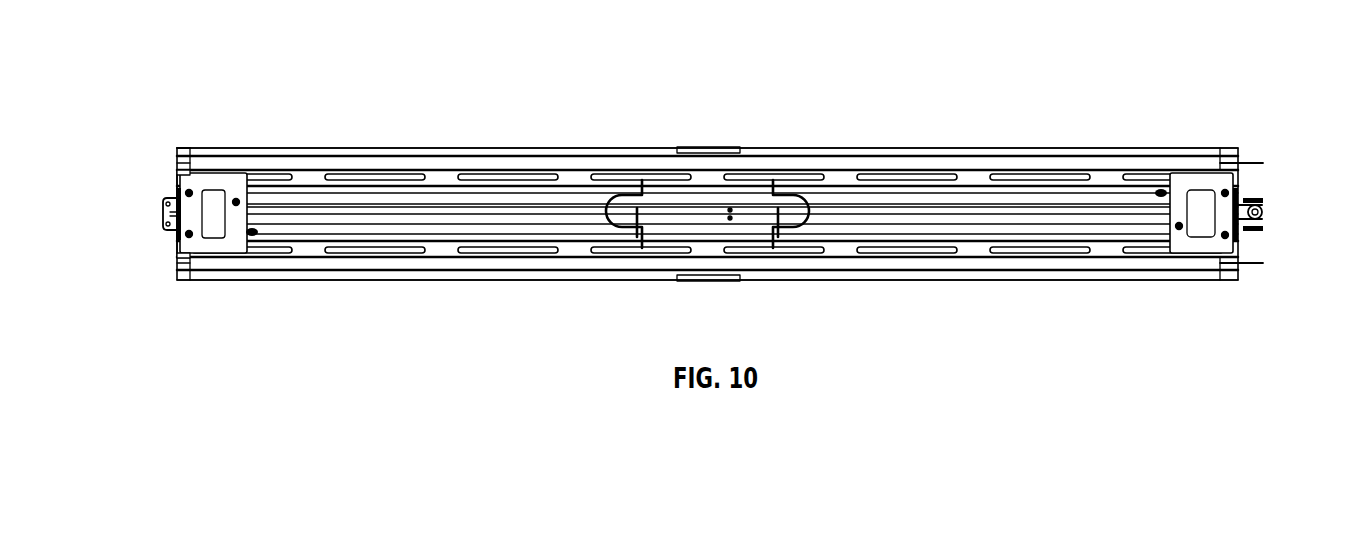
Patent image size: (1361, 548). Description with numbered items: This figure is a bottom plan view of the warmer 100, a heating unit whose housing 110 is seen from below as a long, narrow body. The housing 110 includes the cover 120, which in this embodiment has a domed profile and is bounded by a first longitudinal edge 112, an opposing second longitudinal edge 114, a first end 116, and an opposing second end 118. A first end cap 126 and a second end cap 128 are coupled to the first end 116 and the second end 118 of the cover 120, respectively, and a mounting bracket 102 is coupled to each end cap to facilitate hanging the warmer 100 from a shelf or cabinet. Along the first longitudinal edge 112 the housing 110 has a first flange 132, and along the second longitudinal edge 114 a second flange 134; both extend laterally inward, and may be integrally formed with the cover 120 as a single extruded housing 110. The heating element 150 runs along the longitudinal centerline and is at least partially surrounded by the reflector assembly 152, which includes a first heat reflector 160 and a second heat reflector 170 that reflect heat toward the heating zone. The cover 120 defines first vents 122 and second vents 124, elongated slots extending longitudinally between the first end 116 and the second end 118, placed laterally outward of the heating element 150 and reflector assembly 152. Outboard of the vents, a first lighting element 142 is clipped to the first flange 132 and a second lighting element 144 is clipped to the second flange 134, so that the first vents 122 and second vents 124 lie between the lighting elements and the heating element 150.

The warmer 100 is at (178, 30).
The mounting bracket 102 is at (163, 210).
The housing 110 is at (593, 139).
The first longitudinal edge 112 is at (762, 291).
The second longitudinal edge 114 is at (793, 139).
The first end 116 is at (1272, 212).
The second end 118 is at (118, 215).
The cover 120 is at (270, 148).
The first vents 122 is at (516, 254).
The second vents 124 is at (498, 176).
The first end cap 126 is at (1238, 162).
The second end cap 128 is at (177, 175).
The first flange 132 is at (177, 262).
The second flange 134 is at (185, 148).
The first lighting element 142 is at (353, 262).
The second lighting element 144 is at (365, 165).
The heating element 150 is at (897, 215).
The reflector assembly 152 is at (839, 150).
The first heat reflector 160 is at (970, 185).
The second heat reflector 170 is at (1015, 195).